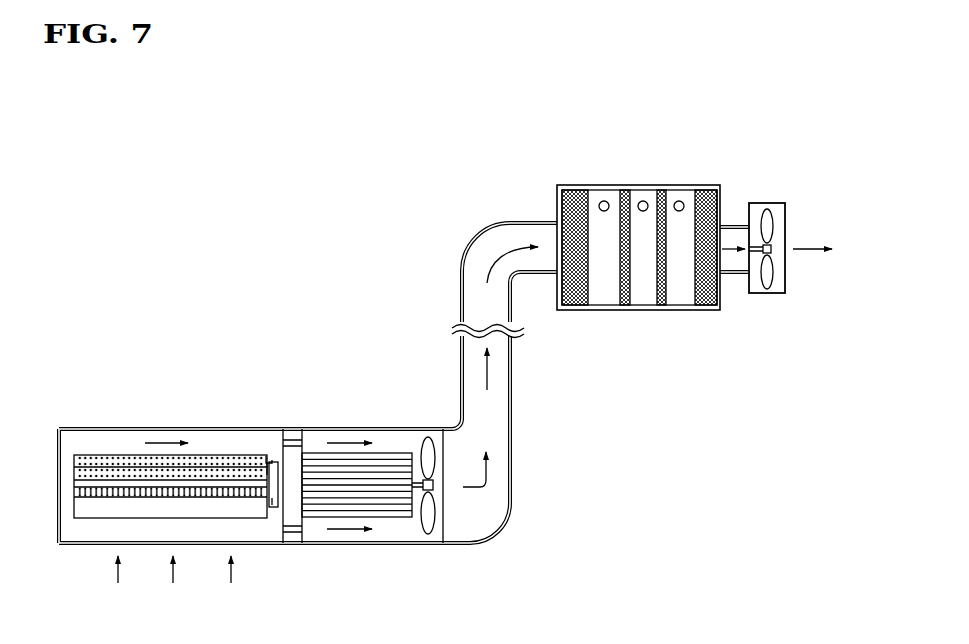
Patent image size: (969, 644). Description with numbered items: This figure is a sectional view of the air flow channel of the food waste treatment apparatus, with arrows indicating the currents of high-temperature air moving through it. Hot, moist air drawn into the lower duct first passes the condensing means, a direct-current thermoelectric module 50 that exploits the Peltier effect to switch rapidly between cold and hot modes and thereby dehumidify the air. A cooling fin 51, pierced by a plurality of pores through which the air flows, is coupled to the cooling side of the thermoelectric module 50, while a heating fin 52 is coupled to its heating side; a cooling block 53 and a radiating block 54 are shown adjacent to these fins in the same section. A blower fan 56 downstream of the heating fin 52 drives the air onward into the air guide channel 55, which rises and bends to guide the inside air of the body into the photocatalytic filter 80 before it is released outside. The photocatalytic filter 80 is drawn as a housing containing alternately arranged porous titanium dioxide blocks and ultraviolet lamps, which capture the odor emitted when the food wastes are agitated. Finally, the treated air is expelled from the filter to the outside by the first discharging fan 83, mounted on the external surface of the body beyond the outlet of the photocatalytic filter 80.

The thermoelectric module 50 is at (277, 504).
The cooling fin 51 is at (108, 488).
The heating fin 52 is at (397, 510).
The cooling block 53 is at (270, 462).
The radiating block 54 is at (296, 458).
The air guide channel 55 is at (512, 427).
The blower fan 56 is at (438, 506).
The photocatalytic filter 80 is at (632, 182).
The first discharging fan 83 is at (769, 277).